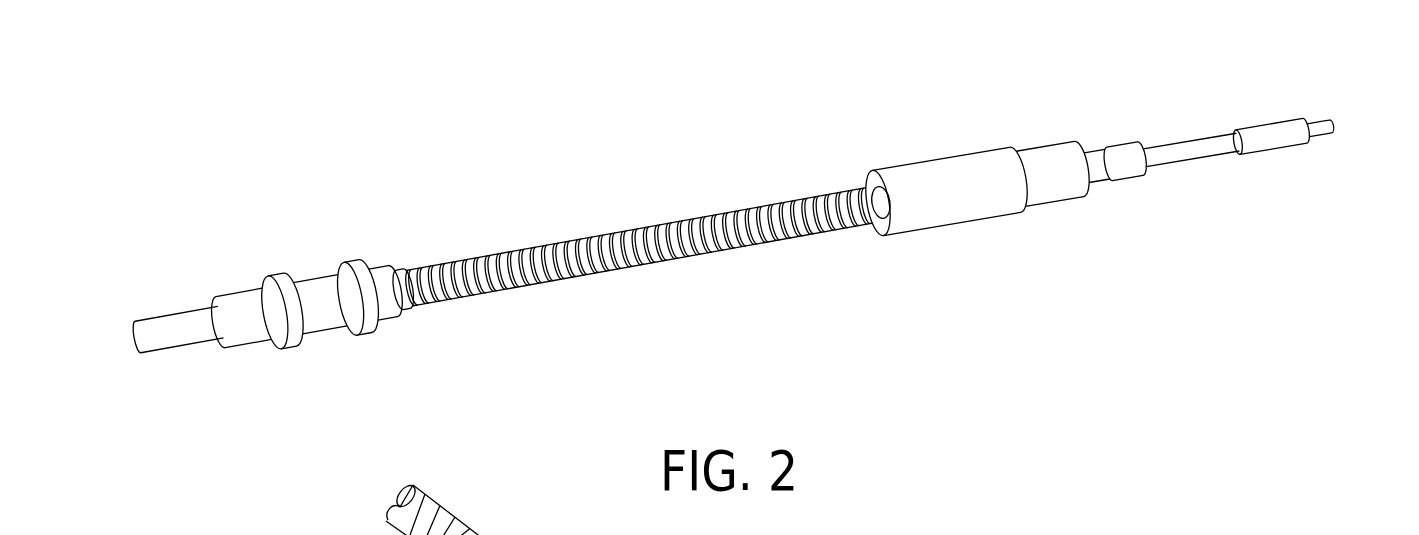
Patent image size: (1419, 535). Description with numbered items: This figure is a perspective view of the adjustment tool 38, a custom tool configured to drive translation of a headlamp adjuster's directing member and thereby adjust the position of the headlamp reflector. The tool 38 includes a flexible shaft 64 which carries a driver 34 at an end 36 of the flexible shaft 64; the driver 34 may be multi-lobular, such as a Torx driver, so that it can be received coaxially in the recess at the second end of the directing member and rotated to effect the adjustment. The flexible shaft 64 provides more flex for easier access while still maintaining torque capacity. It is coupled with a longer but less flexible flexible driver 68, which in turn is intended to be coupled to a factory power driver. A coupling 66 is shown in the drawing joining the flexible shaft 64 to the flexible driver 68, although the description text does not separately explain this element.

The driver 34 is at (1322, 147).
The end of the flexible shaft 36 is at (1337, 118).
The adjustment tool 38 is at (502, 273).
The flexible shaft 64 is at (1190, 150).
The coupling 66 is at (1005, 231).
The flexible driver 68 is at (624, 229).